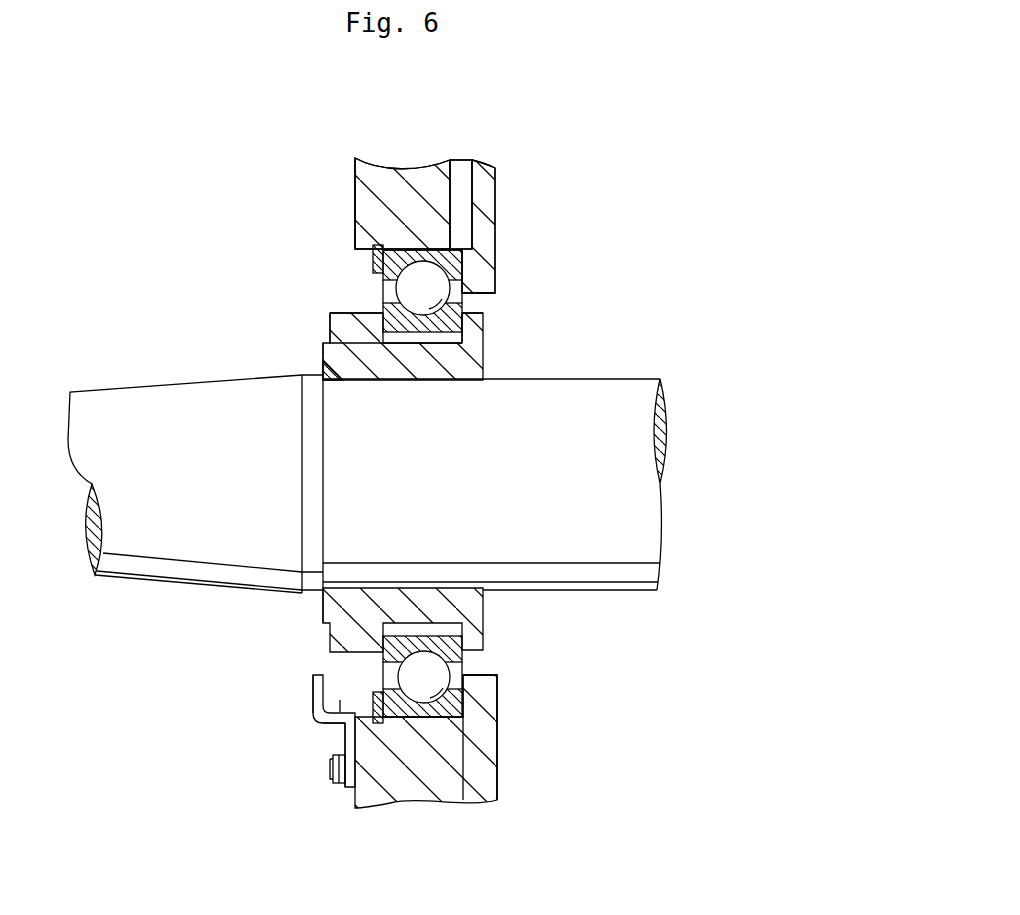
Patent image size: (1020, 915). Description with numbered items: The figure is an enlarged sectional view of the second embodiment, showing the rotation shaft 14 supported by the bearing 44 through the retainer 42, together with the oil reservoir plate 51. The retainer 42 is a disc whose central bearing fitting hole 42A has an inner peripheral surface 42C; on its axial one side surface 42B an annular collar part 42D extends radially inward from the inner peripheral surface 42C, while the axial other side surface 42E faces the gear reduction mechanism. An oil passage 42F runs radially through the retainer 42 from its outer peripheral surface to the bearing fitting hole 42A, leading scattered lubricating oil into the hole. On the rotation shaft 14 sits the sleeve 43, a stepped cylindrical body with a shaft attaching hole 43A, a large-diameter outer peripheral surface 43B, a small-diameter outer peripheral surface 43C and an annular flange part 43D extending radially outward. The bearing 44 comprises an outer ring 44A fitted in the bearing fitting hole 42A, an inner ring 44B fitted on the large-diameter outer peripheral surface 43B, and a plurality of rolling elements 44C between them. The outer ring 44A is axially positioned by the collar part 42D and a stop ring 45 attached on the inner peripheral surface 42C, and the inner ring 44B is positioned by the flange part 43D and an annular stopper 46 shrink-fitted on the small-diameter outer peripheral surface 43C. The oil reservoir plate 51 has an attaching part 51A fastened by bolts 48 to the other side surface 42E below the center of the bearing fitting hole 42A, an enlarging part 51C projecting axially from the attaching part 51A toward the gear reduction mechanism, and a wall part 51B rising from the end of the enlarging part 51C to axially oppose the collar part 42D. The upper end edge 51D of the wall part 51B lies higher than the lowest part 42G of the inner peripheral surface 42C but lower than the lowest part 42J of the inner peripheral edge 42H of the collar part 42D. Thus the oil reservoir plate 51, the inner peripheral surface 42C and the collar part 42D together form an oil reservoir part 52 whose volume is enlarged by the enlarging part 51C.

The rotation shaft 14 is at (142, 465).
The retainer 42 is at (500, 183).
The bearing fitting hole 42A is at (463, 722).
The axial one side surface 42B is at (495, 772).
The inner peripheral surface 42C is at (392, 258).
The collar part 42D is at (477, 702).
The axial other side surface 42E is at (355, 188).
The oil passage 42F is at (458, 225).
The lowest part of the inner peripheral surface 42G is at (412, 710).
The inner peripheral edge 42H is at (485, 300).
The lowest part of the inner peripheral edge 42J is at (475, 672).
The sleeve 43 is at (486, 357).
The shaft attaching hole 43A is at (345, 380).
The large-diameter outer peripheral surface 43B is at (433, 332).
The small-diameter outer peripheral surface 43C is at (353, 337).
The flange part 43D is at (470, 323).
The bearing 44 is at (379, 285).
The outer ring 44A is at (437, 713).
The inner ring 44B is at (467, 633).
The rolling elements 44C is at (425, 677).
The stop ring 45 is at (373, 262).
The annular stopper 46 is at (343, 313).
The bolts 48 is at (332, 770).
The oil reservoir plate 51 is at (347, 733).
The attaching part 51A is at (342, 745).
The wall part 51B is at (317, 695).
The enlarging part 51C is at (335, 715).
The upper end edge 51D is at (317, 678).
The oil reservoir part 52 is at (343, 702).